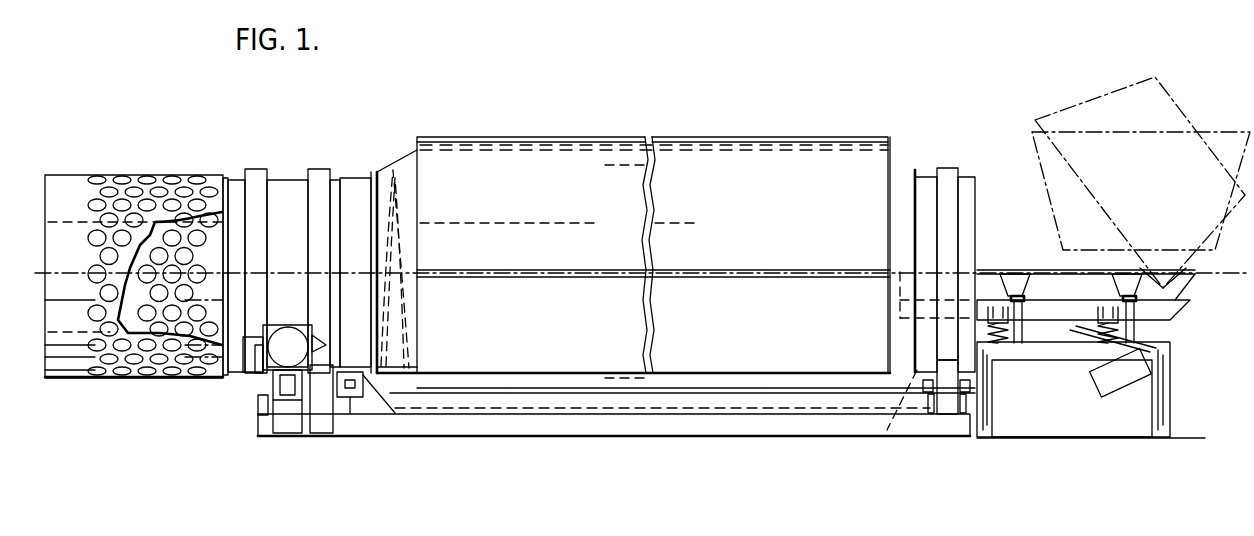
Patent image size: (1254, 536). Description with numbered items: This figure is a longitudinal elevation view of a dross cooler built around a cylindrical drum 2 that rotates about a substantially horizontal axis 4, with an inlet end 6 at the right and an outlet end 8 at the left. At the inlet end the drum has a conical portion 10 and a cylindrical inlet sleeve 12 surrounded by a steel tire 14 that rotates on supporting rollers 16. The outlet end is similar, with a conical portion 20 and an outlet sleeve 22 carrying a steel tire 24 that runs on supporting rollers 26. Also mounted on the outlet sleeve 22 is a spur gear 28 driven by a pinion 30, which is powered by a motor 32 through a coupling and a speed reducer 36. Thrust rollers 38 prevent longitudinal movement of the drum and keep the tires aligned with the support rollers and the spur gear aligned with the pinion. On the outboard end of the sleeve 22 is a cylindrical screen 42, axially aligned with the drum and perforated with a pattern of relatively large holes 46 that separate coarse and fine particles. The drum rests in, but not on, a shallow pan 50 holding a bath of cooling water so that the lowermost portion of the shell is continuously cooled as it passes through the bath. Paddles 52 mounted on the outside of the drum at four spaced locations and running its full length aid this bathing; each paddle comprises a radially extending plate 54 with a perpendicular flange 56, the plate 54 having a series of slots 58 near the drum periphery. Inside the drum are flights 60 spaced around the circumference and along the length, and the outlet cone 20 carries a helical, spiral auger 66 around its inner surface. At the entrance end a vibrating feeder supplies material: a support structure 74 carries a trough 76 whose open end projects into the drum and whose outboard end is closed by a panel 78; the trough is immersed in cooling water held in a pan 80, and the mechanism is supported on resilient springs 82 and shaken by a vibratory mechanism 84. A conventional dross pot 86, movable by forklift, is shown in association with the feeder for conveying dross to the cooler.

The cylindrical drum 2 is at (832, 160).
The horizontal axis 4 is at (40, 272).
The inlet end 6 is at (977, 208).
The outlet end 8 is at (202, 178).
The conical portion 10 is at (905, 170).
The cylindrical inlet sleeve 12 is at (968, 177).
The steel tire 14 is at (948, 168).
The supporting rollers 16 is at (948, 400).
The conical portion 20 is at (402, 160).
The outlet sleeve 22 is at (355, 178).
The steel tire 24 is at (314, 170).
The supporting rollers 26 is at (318, 405).
The spur gear 28 is at (258, 170).
The pinion 30 is at (256, 358).
The motor 32 is at (273, 368).
The speed reducer 36 is at (300, 328).
The thrust rollers 38 is at (362, 388).
The cylindrical screen 42 is at (70, 175).
The holes 46 is at (120, 177).
The shallow pan 50 is at (790, 388).
The paddles 52 is at (595, 137).
The radially extending plate 54 is at (678, 145).
The perpendicular flange 56 is at (738, 137).
The slots 58 is at (790, 147).
The flights 60 is at (525, 222).
The auger 66 is at (392, 190).
The support structure 74 is at (1168, 352).
The trough 76 is at (1195, 272).
The panel 78 is at (1185, 290).
The pan 80 is at (1185, 318).
The resilient springs 82 is at (1020, 345).
The vibratory mechanism 84 is at (1115, 385).
The dross pot 86 is at (1195, 150).